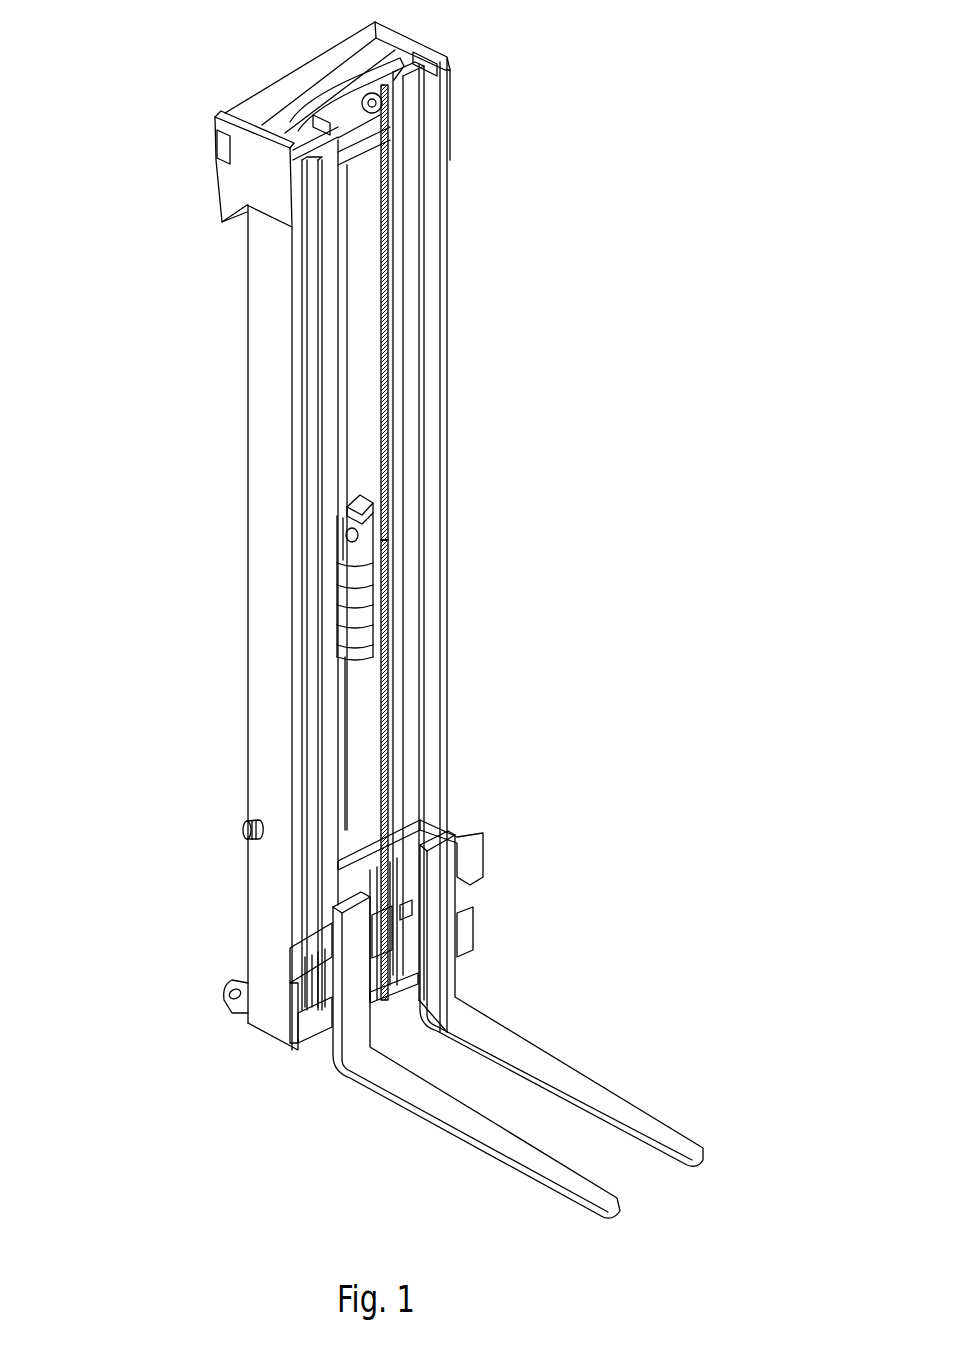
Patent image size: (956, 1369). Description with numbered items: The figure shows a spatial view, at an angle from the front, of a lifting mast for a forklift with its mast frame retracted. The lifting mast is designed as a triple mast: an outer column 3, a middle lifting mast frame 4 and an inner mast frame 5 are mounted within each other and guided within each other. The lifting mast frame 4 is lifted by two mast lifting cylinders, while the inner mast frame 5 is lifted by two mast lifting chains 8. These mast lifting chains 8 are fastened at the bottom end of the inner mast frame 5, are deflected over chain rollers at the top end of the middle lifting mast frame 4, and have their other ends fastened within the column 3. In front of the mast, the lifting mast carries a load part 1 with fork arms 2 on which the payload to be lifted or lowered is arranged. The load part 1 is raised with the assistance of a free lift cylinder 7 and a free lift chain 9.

The load part 1 is at (483, 845).
The fork arms 2 is at (548, 1108).
The outer column 3 is at (270, 637).
The lifting mast frame 4 is at (306, 530).
The inner mast frame 5 is at (328, 447).
The free lift cylinder 7 is at (352, 668).
The mast lifting chains 8 is at (380, 369).
The free lift chain 9 is at (383, 703).